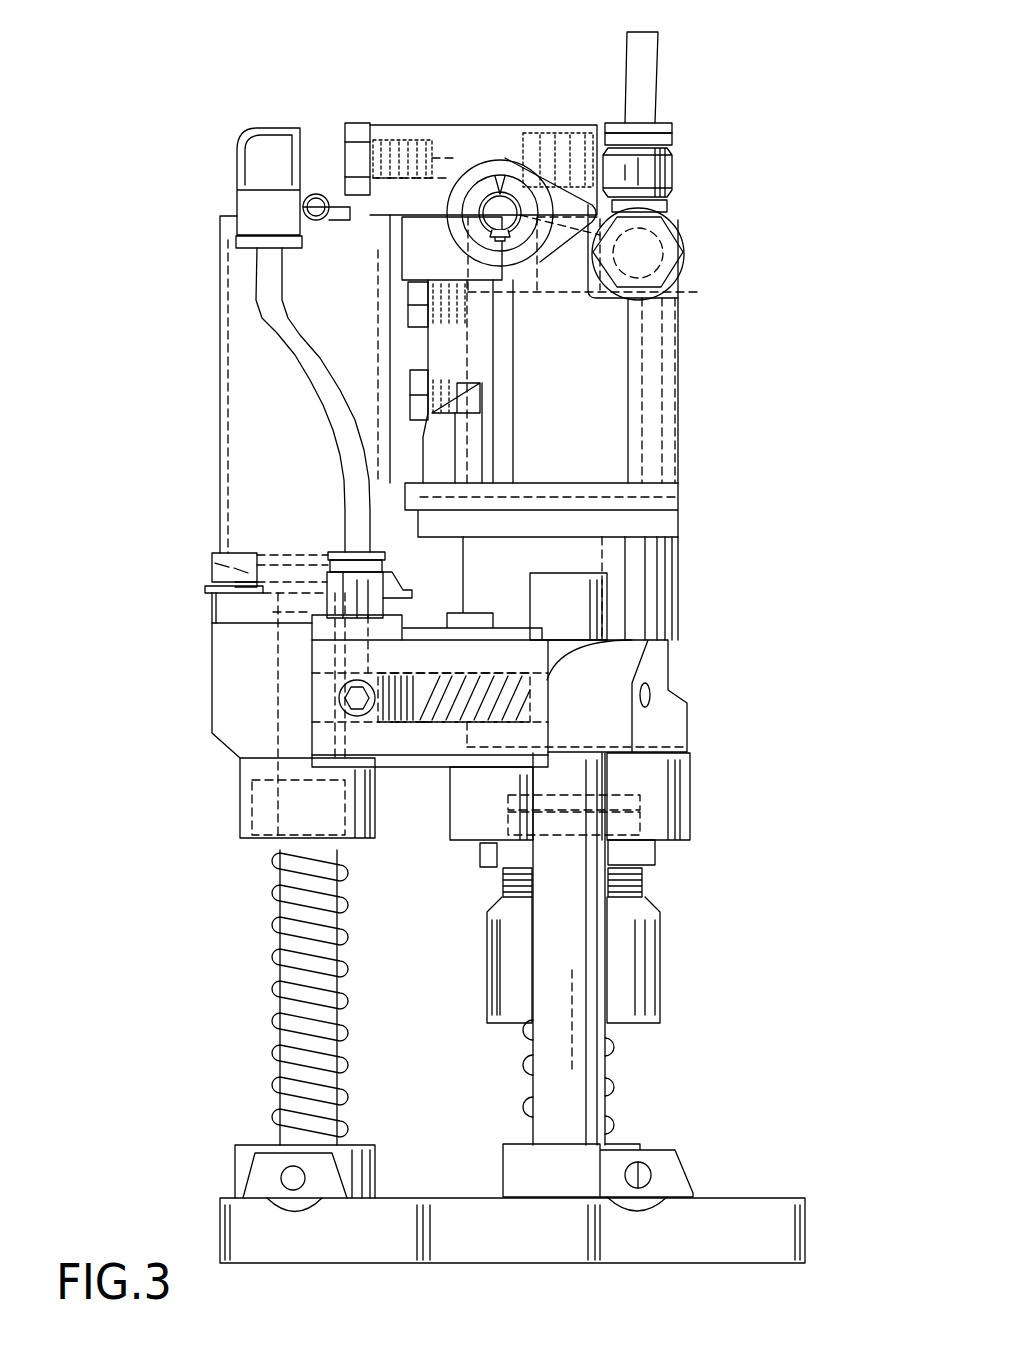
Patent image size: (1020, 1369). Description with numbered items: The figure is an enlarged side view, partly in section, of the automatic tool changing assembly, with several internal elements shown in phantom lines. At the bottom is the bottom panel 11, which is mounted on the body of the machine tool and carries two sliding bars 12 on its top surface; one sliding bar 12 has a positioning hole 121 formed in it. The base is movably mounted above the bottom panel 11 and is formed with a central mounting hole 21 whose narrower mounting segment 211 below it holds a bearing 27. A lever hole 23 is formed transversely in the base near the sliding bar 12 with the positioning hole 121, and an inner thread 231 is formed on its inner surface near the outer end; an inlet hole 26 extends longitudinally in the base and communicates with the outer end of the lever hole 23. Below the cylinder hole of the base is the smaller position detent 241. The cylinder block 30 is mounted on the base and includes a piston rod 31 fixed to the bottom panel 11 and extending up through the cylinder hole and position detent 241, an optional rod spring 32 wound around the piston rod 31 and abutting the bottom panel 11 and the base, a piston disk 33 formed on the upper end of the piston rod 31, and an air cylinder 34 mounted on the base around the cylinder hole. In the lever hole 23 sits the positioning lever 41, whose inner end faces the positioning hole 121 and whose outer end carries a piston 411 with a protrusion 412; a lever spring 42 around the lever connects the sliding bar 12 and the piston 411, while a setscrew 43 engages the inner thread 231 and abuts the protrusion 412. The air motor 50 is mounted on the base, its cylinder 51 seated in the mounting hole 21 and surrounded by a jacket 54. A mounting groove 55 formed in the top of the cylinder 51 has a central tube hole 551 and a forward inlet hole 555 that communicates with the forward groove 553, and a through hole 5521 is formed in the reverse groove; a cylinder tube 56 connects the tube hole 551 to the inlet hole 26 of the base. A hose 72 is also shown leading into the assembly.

The bottom panel 11 is at (722, 1203).
The sliding bar 12 is at (605, 960).
The positioning hole 121 is at (503, 866).
The mounting hole 21 is at (665, 730).
The mounting segment 211 is at (626, 838).
The lever hole 23 is at (502, 683).
The inner thread 231 is at (320, 706).
The position detent 241 is at (285, 806).
The inlet hole 26 is at (362, 635).
The bearing 27 is at (632, 806).
The cylinder block 30 is at (198, 195).
The piston rod 31 is at (285, 1003).
The rod spring 32 is at (272, 1045).
The piston disk 33 is at (200, 555).
The air cylinder 34 is at (228, 255).
The positioning lever 41 is at (528, 718).
The piston 411 is at (400, 722).
The protrusion 412 is at (372, 688).
The lever spring 42 is at (425, 722).
The setscrew 43 is at (320, 685).
The air motor 50 is at (556, 78).
The cylinder 51 is at (665, 583).
The jacket 54 is at (650, 995).
The mounting groove 55 is at (510, 165).
The tube hole 551 is at (499, 200).
The forward groove 553 is at (607, 237).
The forward inlet hole 555 is at (620, 265).
The through hole 5521 is at (660, 350).
The cylinder tube 56 is at (338, 452).
The supply hose 72 is at (645, 78).